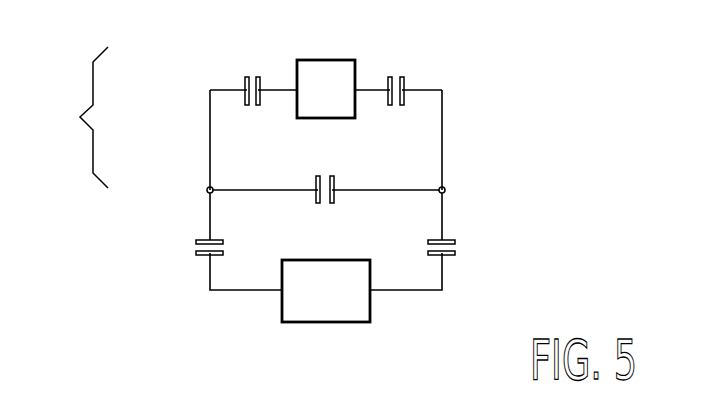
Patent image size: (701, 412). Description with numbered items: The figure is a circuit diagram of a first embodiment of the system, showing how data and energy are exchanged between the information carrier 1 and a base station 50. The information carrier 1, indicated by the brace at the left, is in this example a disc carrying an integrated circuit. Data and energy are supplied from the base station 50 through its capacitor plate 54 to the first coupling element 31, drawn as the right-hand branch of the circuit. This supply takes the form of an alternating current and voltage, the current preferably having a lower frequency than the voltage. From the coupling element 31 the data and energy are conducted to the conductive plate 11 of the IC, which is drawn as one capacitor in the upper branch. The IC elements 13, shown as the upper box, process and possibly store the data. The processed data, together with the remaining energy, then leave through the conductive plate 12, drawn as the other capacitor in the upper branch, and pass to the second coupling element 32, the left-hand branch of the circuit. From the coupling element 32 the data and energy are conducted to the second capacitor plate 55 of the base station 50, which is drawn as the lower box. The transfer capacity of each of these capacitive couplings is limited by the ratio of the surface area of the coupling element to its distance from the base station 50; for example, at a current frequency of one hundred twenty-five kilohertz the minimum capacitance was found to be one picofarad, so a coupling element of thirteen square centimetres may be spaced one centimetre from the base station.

The information carrier 1 is at (75, 132).
The conductive plate 11 is at (390, 77).
The conductive plate 12 is at (270, 74).
The IC elements 13 is at (323, 59).
The first coupling element 31 is at (458, 151).
The second coupling element 32 is at (194, 151).
The base station 50 is at (356, 335).
The capacitor plate 54 is at (450, 256).
The second capacitor plate 55 is at (202, 256).